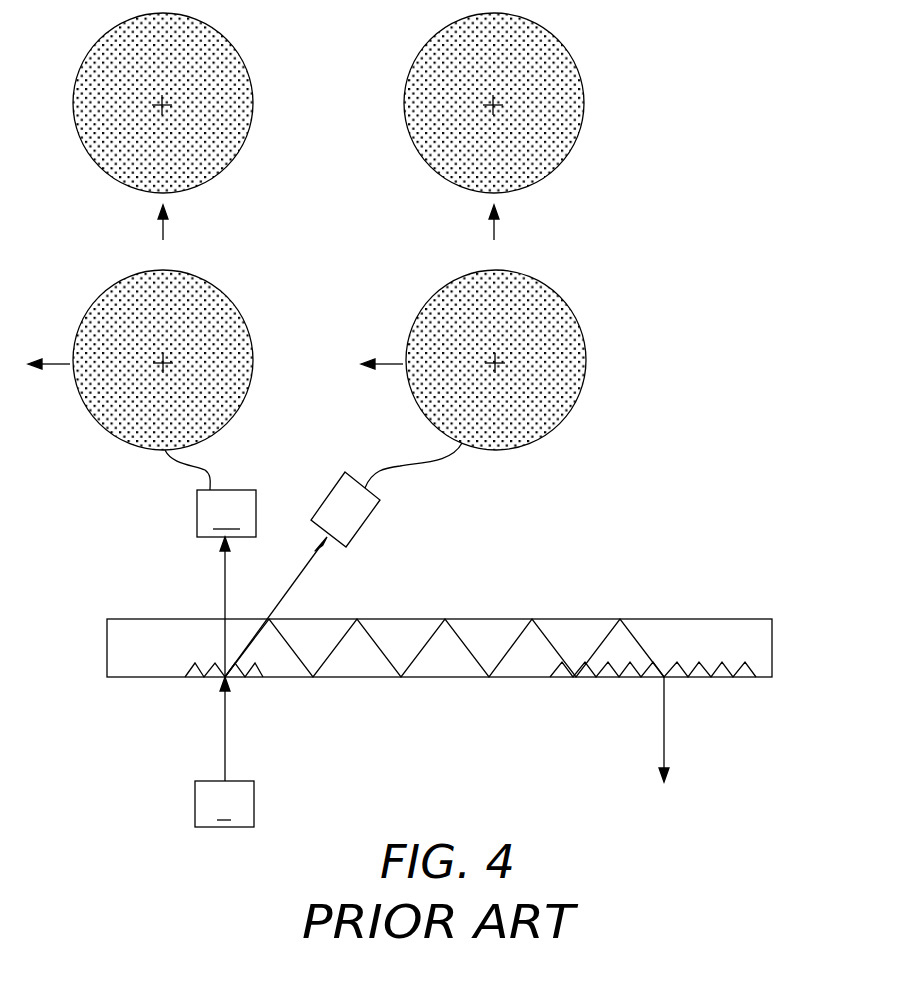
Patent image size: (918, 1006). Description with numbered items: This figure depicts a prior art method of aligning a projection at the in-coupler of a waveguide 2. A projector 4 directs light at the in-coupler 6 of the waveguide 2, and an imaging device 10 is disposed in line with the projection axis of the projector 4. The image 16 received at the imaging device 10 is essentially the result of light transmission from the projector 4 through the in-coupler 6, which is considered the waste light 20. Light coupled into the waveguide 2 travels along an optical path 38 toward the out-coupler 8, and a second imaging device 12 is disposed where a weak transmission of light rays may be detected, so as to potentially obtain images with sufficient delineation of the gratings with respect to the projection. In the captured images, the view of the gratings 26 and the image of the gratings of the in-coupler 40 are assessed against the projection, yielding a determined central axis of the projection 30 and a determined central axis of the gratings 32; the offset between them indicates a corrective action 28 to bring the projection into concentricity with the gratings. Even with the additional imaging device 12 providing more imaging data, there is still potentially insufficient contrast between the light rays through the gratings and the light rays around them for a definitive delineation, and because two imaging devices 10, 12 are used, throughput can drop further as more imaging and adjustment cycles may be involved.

The waveguide 2 is at (672, 619).
The projector 4 is at (224, 752).
The in-coupler 6 is at (193, 677).
The out-coupler 8 is at (606, 677).
The imaging device 10 is at (210, 493).
The imaging device 12 is at (335, 486).
The view of projector as received by imaging device 16 is at (248, 133).
The light transmitted through waveguide 20 is at (223, 572).
The view of gratings as received by imaging device 26 is at (195, 45).
The corrective action 28 is at (55, 364).
The determined central axis of projection 30 is at (167, 104).
The determined central axis of gratings 32 is at (145, 363).
The optical path 38 is at (423, 640).
The image of gratings of in-coupler 40 is at (190, 308).